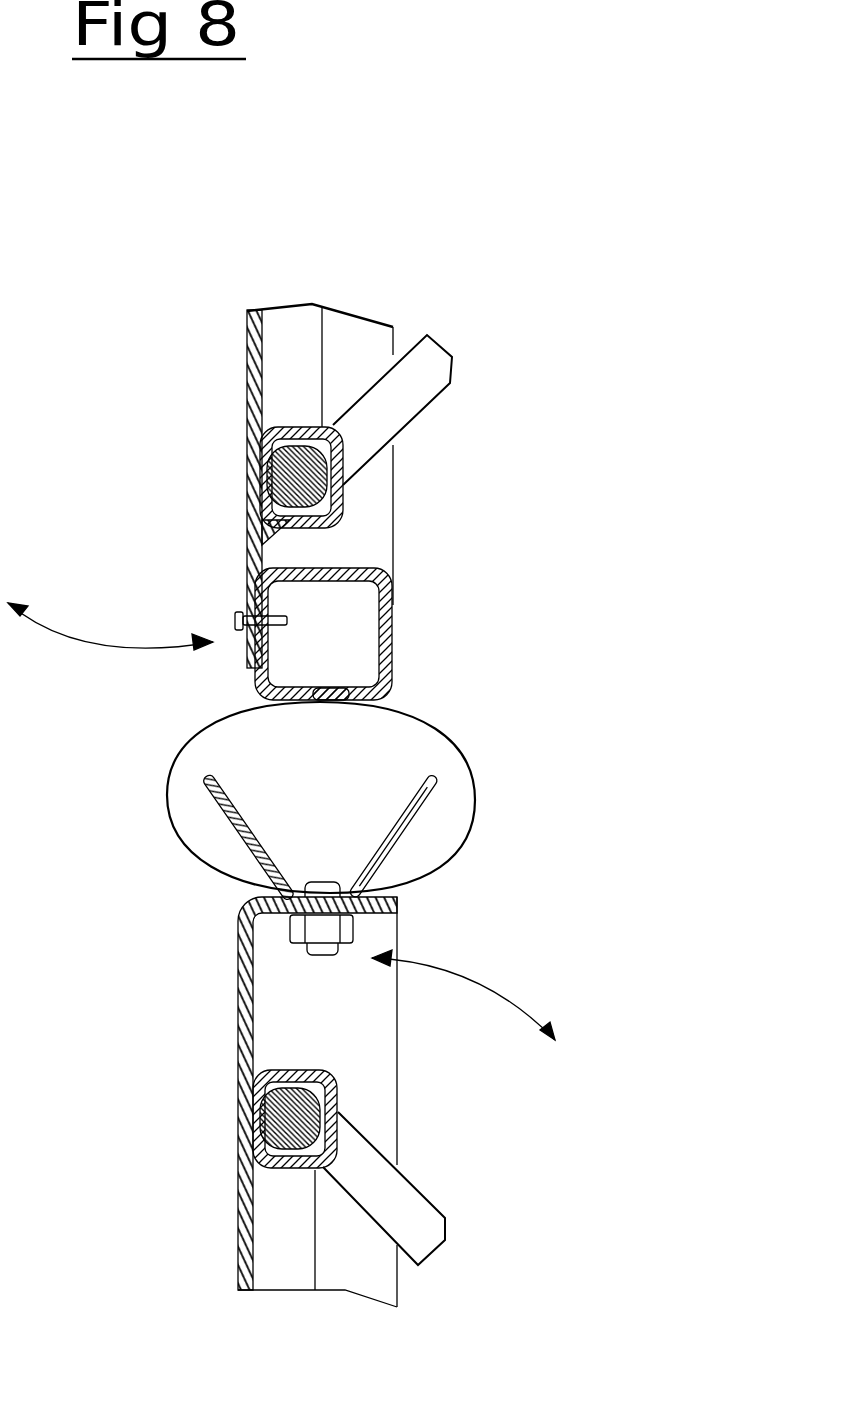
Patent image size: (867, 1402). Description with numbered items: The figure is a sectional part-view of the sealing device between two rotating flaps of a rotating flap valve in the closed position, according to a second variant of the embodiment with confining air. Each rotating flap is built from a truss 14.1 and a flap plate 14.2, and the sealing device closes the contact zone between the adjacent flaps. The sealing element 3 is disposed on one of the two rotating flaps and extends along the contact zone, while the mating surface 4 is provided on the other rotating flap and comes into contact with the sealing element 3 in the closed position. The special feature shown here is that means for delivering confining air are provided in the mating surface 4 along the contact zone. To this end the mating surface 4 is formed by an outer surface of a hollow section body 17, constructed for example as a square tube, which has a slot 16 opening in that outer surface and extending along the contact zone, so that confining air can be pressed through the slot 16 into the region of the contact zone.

The sealing element 3 is at (459, 849).
The mating surface 4 is at (477, 802).
The truss 14.1 is at (539, 719).
The flap plate 14.2 is at (504, 725).
The slot 16 is at (532, 656).
The hollow section body 17 is at (495, 572).